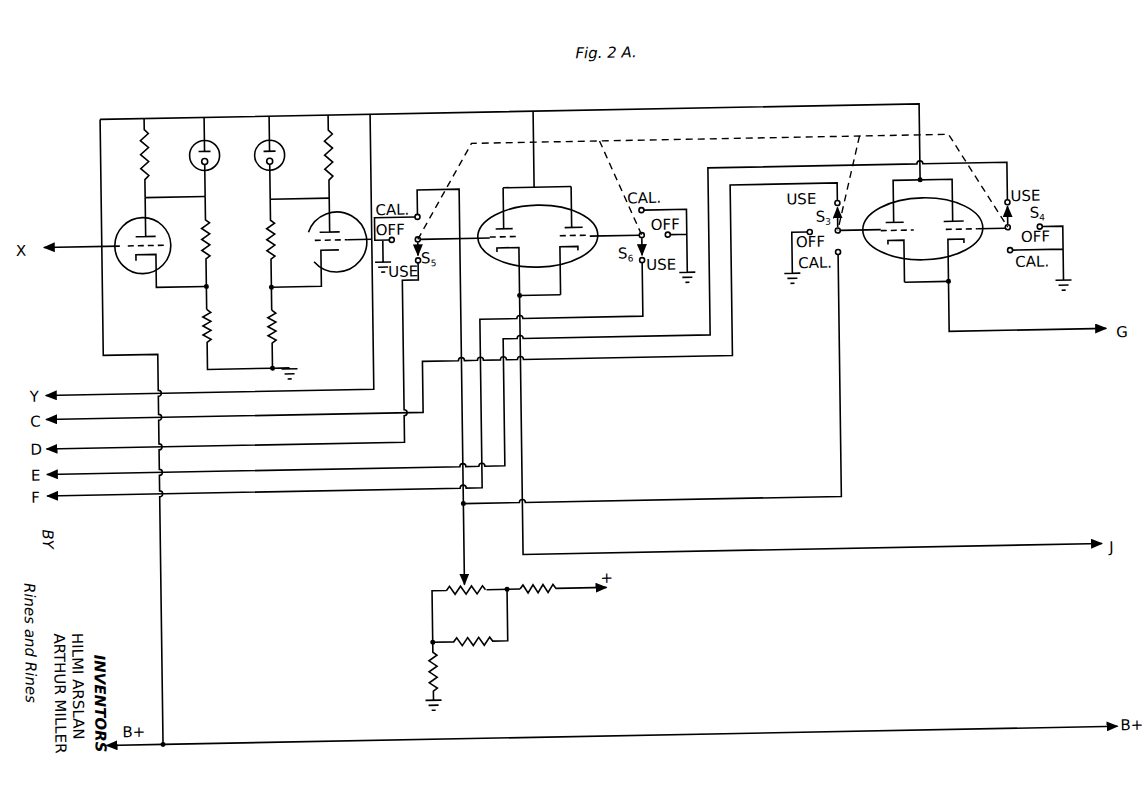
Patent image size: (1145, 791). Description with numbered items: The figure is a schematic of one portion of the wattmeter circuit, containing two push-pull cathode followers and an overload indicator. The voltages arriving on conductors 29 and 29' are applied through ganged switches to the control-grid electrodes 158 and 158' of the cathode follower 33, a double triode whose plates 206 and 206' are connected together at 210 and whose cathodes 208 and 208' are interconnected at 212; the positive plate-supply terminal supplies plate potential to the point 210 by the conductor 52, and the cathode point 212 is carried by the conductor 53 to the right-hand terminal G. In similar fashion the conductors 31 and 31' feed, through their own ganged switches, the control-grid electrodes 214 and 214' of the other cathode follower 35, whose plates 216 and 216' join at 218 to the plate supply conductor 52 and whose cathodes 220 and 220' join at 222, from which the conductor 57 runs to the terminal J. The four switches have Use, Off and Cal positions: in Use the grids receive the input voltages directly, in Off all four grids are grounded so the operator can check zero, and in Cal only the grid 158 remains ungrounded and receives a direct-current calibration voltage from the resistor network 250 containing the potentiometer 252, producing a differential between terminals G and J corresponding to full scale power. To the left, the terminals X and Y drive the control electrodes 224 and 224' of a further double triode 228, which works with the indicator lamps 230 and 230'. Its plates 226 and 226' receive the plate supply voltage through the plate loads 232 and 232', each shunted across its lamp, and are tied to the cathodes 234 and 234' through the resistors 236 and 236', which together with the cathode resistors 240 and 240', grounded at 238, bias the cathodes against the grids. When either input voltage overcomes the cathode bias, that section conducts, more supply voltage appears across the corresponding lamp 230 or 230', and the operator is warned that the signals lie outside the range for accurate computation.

The B+ plate supply conductor 52 is at (413, 110).
The plate load 232 is at (164, 158).
The indicator lamp 230 is at (221, 157).
The indicator lamp 230' is at (288, 157).
The plate load 232' is at (351, 156).
The double triode 228 is at (258, 208).
The plate 226 is at (162, 217).
The plate 226' is at (314, 215).
The control electrode 224 is at (142, 265).
The control electrode 224' is at (348, 227).
The cathode 234 is at (171, 269).
The cathode 234' is at (315, 276).
The resistor 236 is at (226, 253).
The resistor 236' is at (254, 255).
The cathode resistor 240 is at (238, 338).
The cathode resistor 240' is at (296, 338).
The ground 238 is at (300, 365).
The cathode follower 35 is at (492, 263).
The plate connection point 218 is at (541, 186).
The control-grid electrode 214 is at (490, 209).
The control-grid electrode 214' is at (592, 207).
The plate 216 is at (514, 222).
The plate 216' is at (561, 212).
The cathode 220 is at (526, 270).
The cathode 220' is at (586, 270).
The cathode junction 222 is at (538, 286).
The cathode follower 33 is at (896, 264).
The plate connection point 210 is at (896, 187).
The plate 206 is at (905, 210).
The plate 206' is at (938, 202).
The cathode 208 is at (911, 259).
The cathode 208' is at (936, 261).
The cathode connection point 212 is at (953, 291).
The control-grid electrode 158 is at (865, 260).
The control-grid electrode 158' is at (990, 253).
The conductor 53 is at (1072, 339).
The conductor 57 is at (1041, 553).
The conductor 29 is at (441, 301).
The conductor 29' is at (551, 316).
The conductor 31 is at (240, 356).
The conductor 31' is at (344, 379).
The potentiometer 252 is at (458, 578).
The resistor network 250 is at (484, 608).